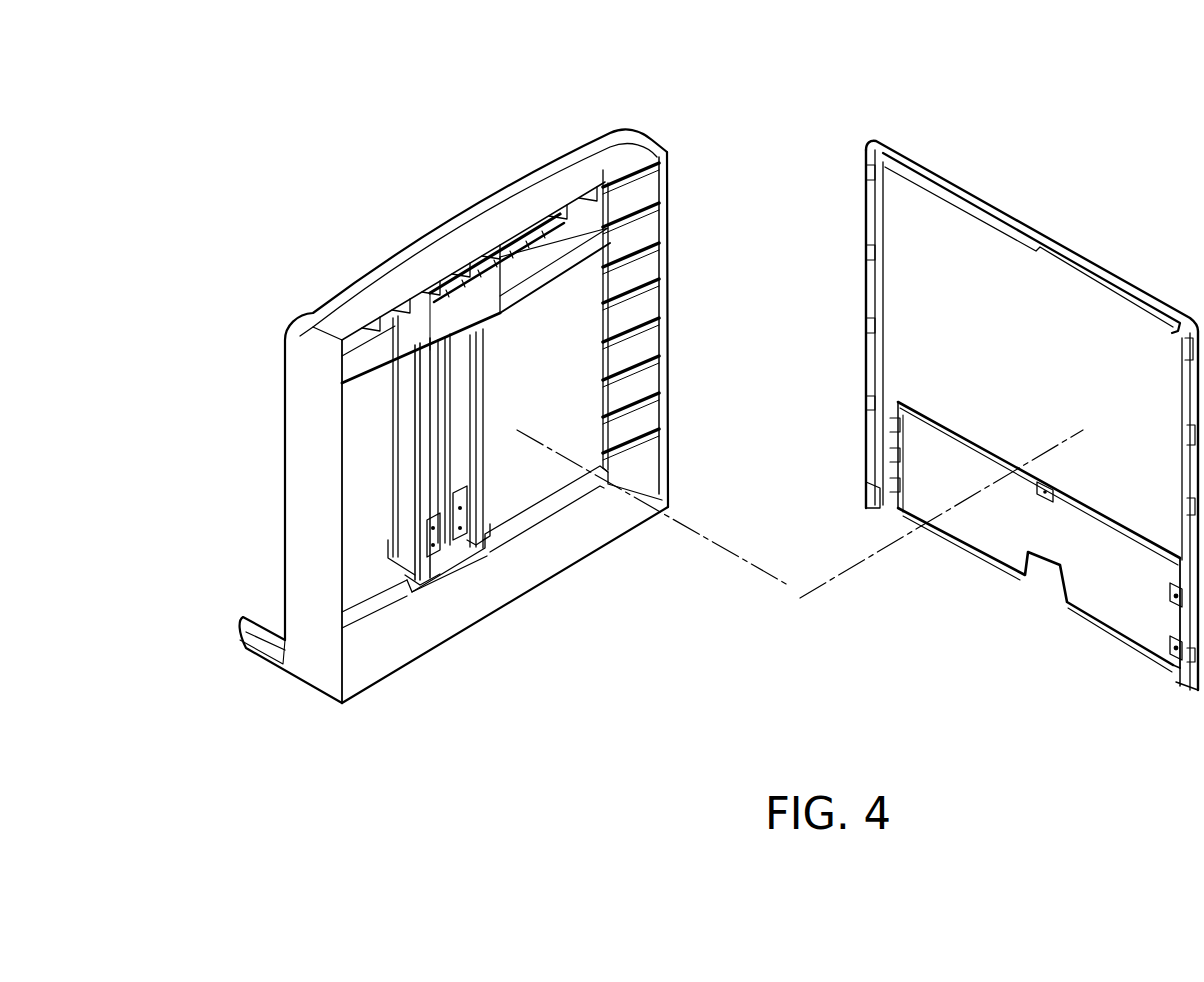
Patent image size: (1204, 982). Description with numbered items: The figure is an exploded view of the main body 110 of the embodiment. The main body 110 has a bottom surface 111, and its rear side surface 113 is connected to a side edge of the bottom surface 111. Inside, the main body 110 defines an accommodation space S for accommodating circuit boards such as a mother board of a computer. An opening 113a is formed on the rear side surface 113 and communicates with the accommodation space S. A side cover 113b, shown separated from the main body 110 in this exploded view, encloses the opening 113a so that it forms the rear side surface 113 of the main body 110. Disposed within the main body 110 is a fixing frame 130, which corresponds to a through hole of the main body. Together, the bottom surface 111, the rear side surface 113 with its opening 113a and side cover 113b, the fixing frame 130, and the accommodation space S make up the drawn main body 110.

The main body 110 is at (447, 180).
The bottom surface 111 is at (447, 650).
The rear side surface 113 is at (835, 708).
The opening 113a is at (534, 590).
The side cover 113b is at (1000, 514).
The fixing frame 130 is at (412, 492).
The accommodation space S is at (568, 347).